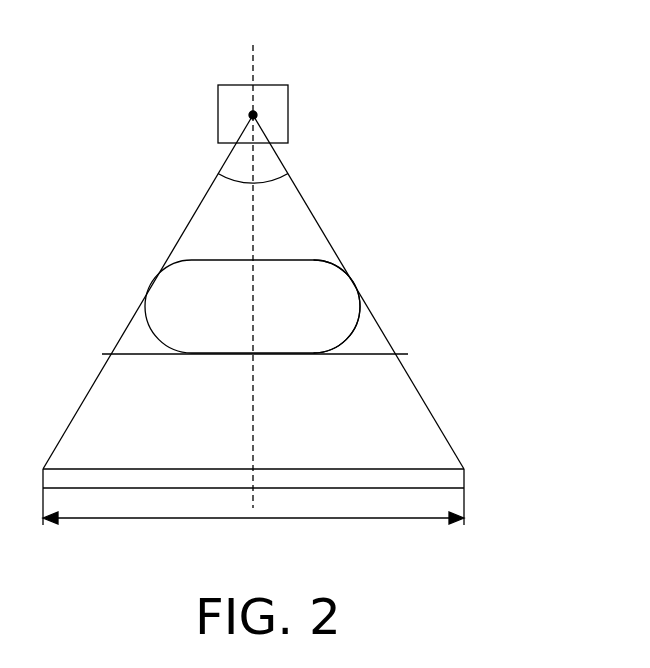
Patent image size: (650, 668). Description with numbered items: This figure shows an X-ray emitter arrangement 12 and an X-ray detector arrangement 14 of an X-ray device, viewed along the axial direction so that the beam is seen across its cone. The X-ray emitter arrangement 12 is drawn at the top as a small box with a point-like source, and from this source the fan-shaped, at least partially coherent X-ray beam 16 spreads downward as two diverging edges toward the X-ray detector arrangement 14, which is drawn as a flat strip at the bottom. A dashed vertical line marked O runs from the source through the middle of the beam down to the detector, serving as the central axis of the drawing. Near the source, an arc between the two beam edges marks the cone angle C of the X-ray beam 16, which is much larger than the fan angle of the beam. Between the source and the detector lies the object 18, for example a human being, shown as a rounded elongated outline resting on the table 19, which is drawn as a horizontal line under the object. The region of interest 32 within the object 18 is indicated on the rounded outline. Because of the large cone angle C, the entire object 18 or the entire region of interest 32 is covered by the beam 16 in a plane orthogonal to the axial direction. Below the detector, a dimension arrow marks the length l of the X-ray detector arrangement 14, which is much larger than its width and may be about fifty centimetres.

The X-ray emitter arrangement 12 is at (218, 108).
The X-ray detector arrangement 14 is at (466, 479).
The X-ray beam 16 is at (197, 210).
The object 18 is at (316, 270).
The region of interest 32 is at (344, 299).
The table 19 is at (408, 354).
The optical axis O is at (256, 62).
The cone angle C is at (276, 181).
The length l is at (253, 532).